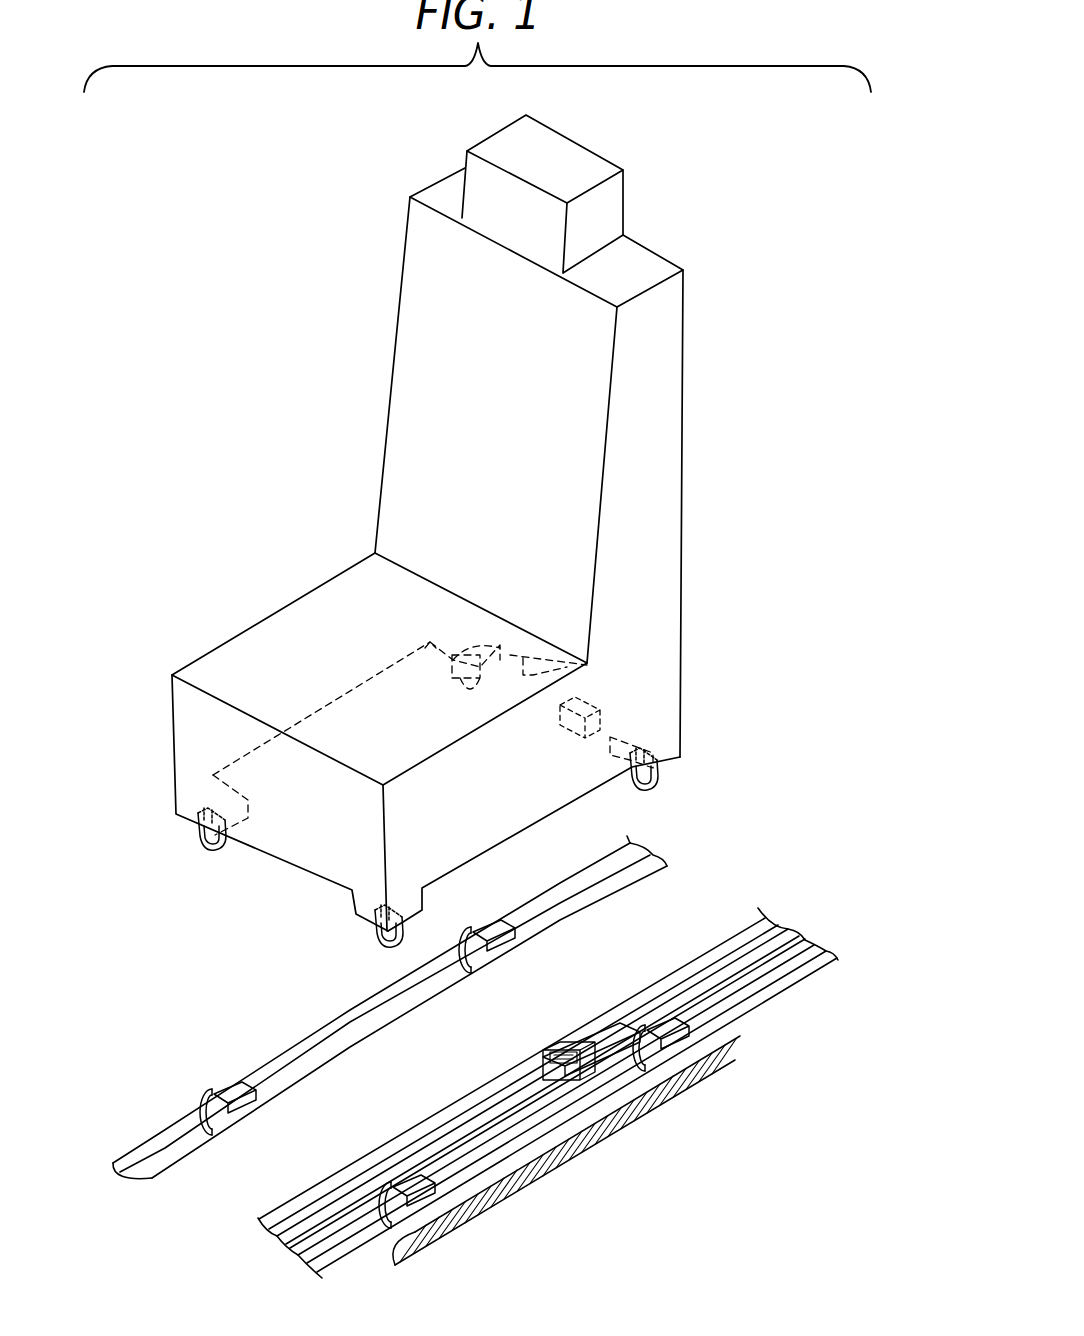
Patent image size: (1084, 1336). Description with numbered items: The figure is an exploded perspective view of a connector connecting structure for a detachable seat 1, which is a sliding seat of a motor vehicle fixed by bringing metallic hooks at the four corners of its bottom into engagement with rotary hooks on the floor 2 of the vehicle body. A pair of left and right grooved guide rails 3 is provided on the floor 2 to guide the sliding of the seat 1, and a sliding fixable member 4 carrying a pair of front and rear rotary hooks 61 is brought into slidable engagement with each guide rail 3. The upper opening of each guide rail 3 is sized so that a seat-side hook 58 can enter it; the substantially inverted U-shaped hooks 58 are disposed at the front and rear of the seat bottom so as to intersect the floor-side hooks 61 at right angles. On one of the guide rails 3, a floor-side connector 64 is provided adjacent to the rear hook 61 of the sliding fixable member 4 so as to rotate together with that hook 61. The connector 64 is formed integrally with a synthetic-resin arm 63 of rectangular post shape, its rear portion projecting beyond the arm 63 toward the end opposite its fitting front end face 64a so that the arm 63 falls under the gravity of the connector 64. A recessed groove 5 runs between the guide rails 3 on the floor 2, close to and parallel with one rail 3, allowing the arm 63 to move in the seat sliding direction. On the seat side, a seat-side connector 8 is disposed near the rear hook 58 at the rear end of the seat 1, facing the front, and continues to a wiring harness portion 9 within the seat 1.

The detachable seat 1 is at (376, 523).
The floor 2 is at (693, 888).
The guide rail 3 is at (158, 1140).
The sliding fixable member 4 is at (330, 1052).
The recessed groove 5 is at (702, 962).
The seat-side connector 8 is at (617, 707).
The wiring harness portion 9 is at (600, 663).
The seat-side hook 58 is at (206, 847).
The rotary hook 61 is at (210, 1088).
The arm 63 is at (598, 1037).
The floor-side connector 64 is at (540, 1060).
The fitting front end face 64a is at (568, 1052).